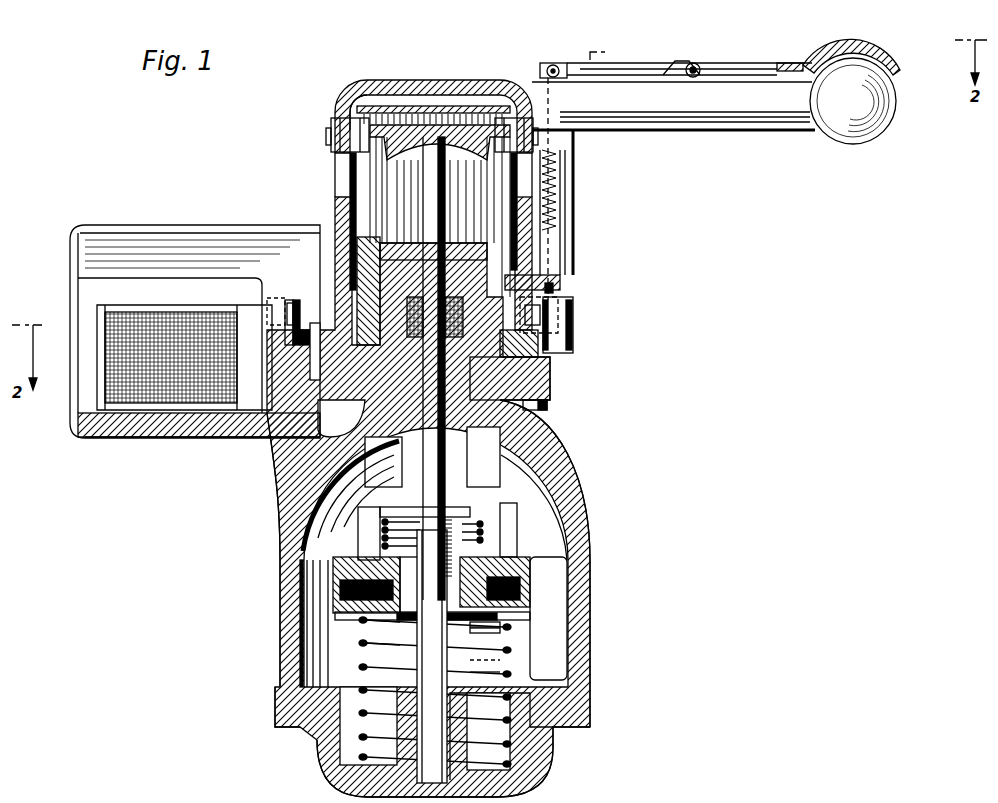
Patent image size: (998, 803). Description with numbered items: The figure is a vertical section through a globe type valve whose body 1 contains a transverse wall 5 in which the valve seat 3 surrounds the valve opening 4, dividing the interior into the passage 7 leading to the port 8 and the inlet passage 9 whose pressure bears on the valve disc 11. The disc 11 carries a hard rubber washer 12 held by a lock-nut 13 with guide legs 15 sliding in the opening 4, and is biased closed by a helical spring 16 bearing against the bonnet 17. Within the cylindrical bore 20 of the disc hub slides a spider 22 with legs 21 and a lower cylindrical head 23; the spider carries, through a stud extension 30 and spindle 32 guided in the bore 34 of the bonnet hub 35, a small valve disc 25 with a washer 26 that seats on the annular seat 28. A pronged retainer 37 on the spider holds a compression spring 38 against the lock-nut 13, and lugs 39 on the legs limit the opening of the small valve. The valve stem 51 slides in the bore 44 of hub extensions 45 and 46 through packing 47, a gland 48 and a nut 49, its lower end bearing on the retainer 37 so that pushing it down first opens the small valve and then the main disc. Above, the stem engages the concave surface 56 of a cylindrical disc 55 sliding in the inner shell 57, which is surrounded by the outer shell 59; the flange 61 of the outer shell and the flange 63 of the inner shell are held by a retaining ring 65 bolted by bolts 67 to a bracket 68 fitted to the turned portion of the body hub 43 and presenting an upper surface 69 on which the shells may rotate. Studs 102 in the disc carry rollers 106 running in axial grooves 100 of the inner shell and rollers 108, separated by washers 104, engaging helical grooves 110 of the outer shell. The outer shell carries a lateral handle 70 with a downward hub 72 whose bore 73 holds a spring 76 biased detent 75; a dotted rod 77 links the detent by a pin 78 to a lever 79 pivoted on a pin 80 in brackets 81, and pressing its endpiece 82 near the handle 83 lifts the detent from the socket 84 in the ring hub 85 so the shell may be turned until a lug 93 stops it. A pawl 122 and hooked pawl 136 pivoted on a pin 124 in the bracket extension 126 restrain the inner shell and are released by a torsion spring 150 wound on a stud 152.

The valve body 1 is at (590, 526).
The valve seat 3 is at (533, 563).
The valve opening 4 is at (583, 529).
The transverse wall 5 is at (307, 547).
The passage 7 is at (527, 477).
The port 8 is at (527, 463).
The passage 9 is at (590, 590).
The valve disc 11 is at (335, 610).
The hard rubber washer 12 is at (340, 590).
The lock-nut 13 is at (593, 548).
The guide legs 15 is at (370, 487).
The helical spring 16 is at (360, 640).
The valve bonnet 17 is at (317, 753).
The cylindrical bore 20 is at (302, 557).
The ribs or legs 21 is at (530, 588).
The sliding spider 22 is at (355, 607).
The cylindrical head 23 is at (358, 645).
The valve disc 25 is at (503, 630).
The washer 26 is at (500, 618).
The annular valve seat 28 is at (530, 610).
The stud extension 30 is at (505, 660).
The spindle 32 is at (507, 668).
The bore 34 is at (503, 707).
The hub 35 is at (467, 740).
The retainer 37 is at (590, 470).
The helical compression spring 38 is at (520, 495).
The lugs 39 is at (397, 503).
The hub 43 is at (307, 460).
The bore 44 is at (393, 445).
The hub extension 45 is at (470, 450).
The hub extension 46 is at (636, 381).
The packing 47 is at (375, 278).
The gland 48 is at (600, 374).
The nut 49 is at (452, 247).
The valve stem 51 is at (440, 176).
The cylindrical disc 55 is at (440, 127).
The concave surface 56 is at (398, 106).
The cylindrical shell 57 is at (370, 83).
The shell 59 is at (345, 102).
The flange 61 is at (555, 326).
The flange 63 is at (565, 345).
The retaining ring 65 is at (563, 353).
The bolts 67 is at (550, 404).
The bracket 68 is at (170, 437).
The upper surface 69 is at (549, 368).
The handle 70 is at (768, 130).
The hub 72 is at (533, 224).
The bore 73 is at (573, 240).
The detent 75 is at (563, 283).
The spring 76 is at (573, 162).
The rod 77 is at (553, 106).
The pin 78 is at (557, 64).
The lever 79 is at (597, 65).
The pin 80 is at (701, 66).
The brackets 81 is at (670, 62).
The endpiece 82 is at (852, 47).
The handle 83 is at (866, 136).
The socket 84 is at (560, 300).
The hub 85 is at (560, 315).
The lug 93 is at (600, 280).
The grooves 100 is at (372, 176).
The studs 102 is at (328, 132).
The washers 104 is at (518, 118).
The rollers 106 is at (357, 168).
The rollers 108 is at (352, 158).
The grooves 110 is at (343, 185).
The pawl 122 is at (323, 423).
The pin 124 is at (257, 433).
The bracket extension 126 is at (287, 352).
The hooked pawl 136 is at (290, 357).
The torsion spring 150 is at (267, 317).
The stud 152 is at (273, 300).